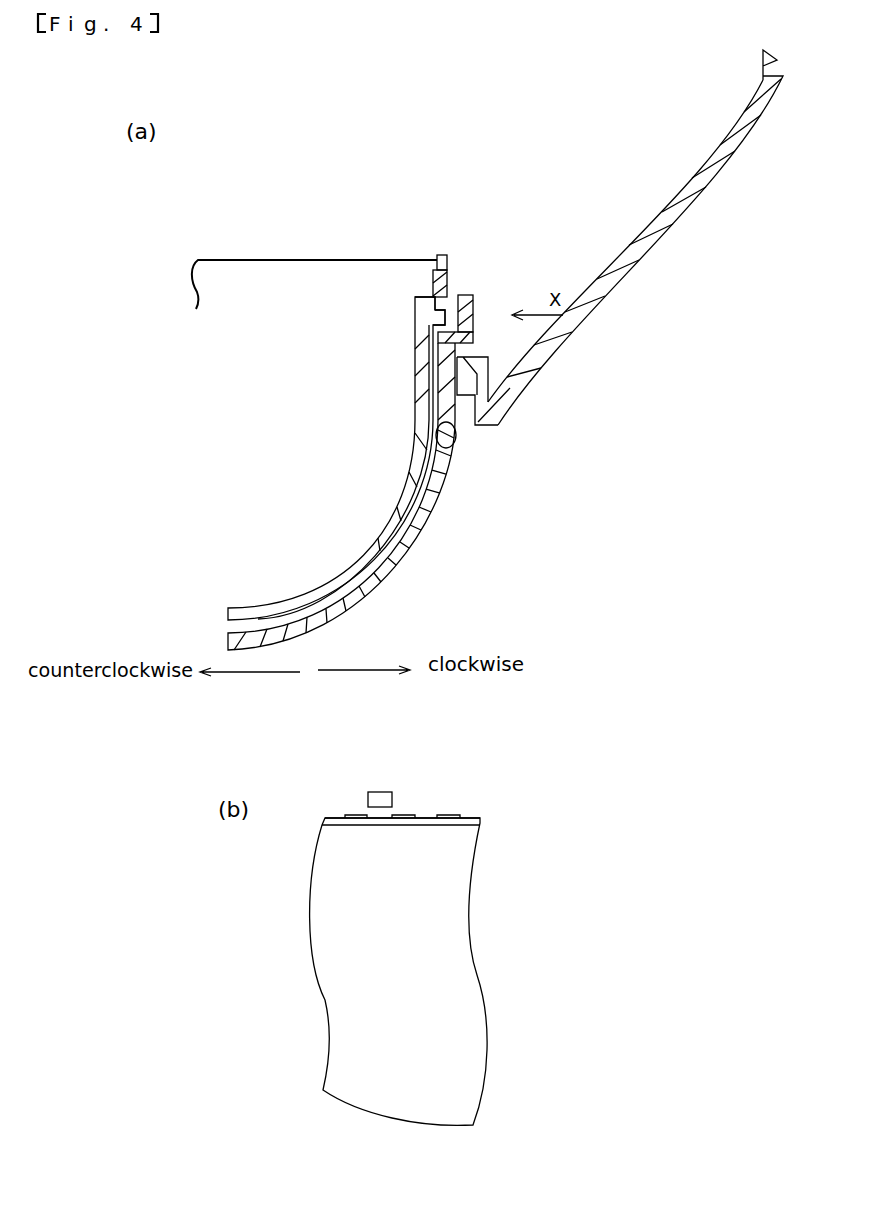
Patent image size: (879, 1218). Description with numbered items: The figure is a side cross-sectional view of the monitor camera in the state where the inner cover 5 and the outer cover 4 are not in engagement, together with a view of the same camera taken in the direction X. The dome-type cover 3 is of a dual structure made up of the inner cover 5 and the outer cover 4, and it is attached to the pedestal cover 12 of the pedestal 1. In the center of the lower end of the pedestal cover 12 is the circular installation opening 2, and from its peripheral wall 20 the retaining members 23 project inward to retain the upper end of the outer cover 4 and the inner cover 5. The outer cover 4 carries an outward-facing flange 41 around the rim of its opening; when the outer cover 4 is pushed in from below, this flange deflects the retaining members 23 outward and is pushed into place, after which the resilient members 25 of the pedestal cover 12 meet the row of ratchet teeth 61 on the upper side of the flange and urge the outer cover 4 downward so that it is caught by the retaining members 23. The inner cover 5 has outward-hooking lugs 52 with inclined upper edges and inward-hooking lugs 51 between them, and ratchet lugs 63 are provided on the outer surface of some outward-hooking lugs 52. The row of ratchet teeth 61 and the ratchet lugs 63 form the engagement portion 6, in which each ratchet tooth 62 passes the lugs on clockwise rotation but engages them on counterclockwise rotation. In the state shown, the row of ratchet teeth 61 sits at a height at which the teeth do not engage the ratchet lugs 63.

The pedestal 1 is at (648, 307).
The pedestal cover 12 is at (570, 333).
The installation opening 2 is at (456, 440).
The peripheral wall 20 is at (459, 419).
The retaining member 23 is at (478, 378).
The resilient member 25 is at (463, 297).
The dome-type cover 3 is at (521, 558).
The outer cover 4 is at (458, 501).
The outward-facing flange 41 is at (468, 349).
The inner cover 5 is at (404, 541).
The inward-hooking lug 51 is at (447, 262).
The outward-hooking lug 52 is at (416, 302).
The engagement portion 6 is at (356, 320).
The row of ratchet teeth 61 is at (436, 336).
The ratchet tooth 62 is at (415, 820).
The ratchet lug 63 is at (441, 324).